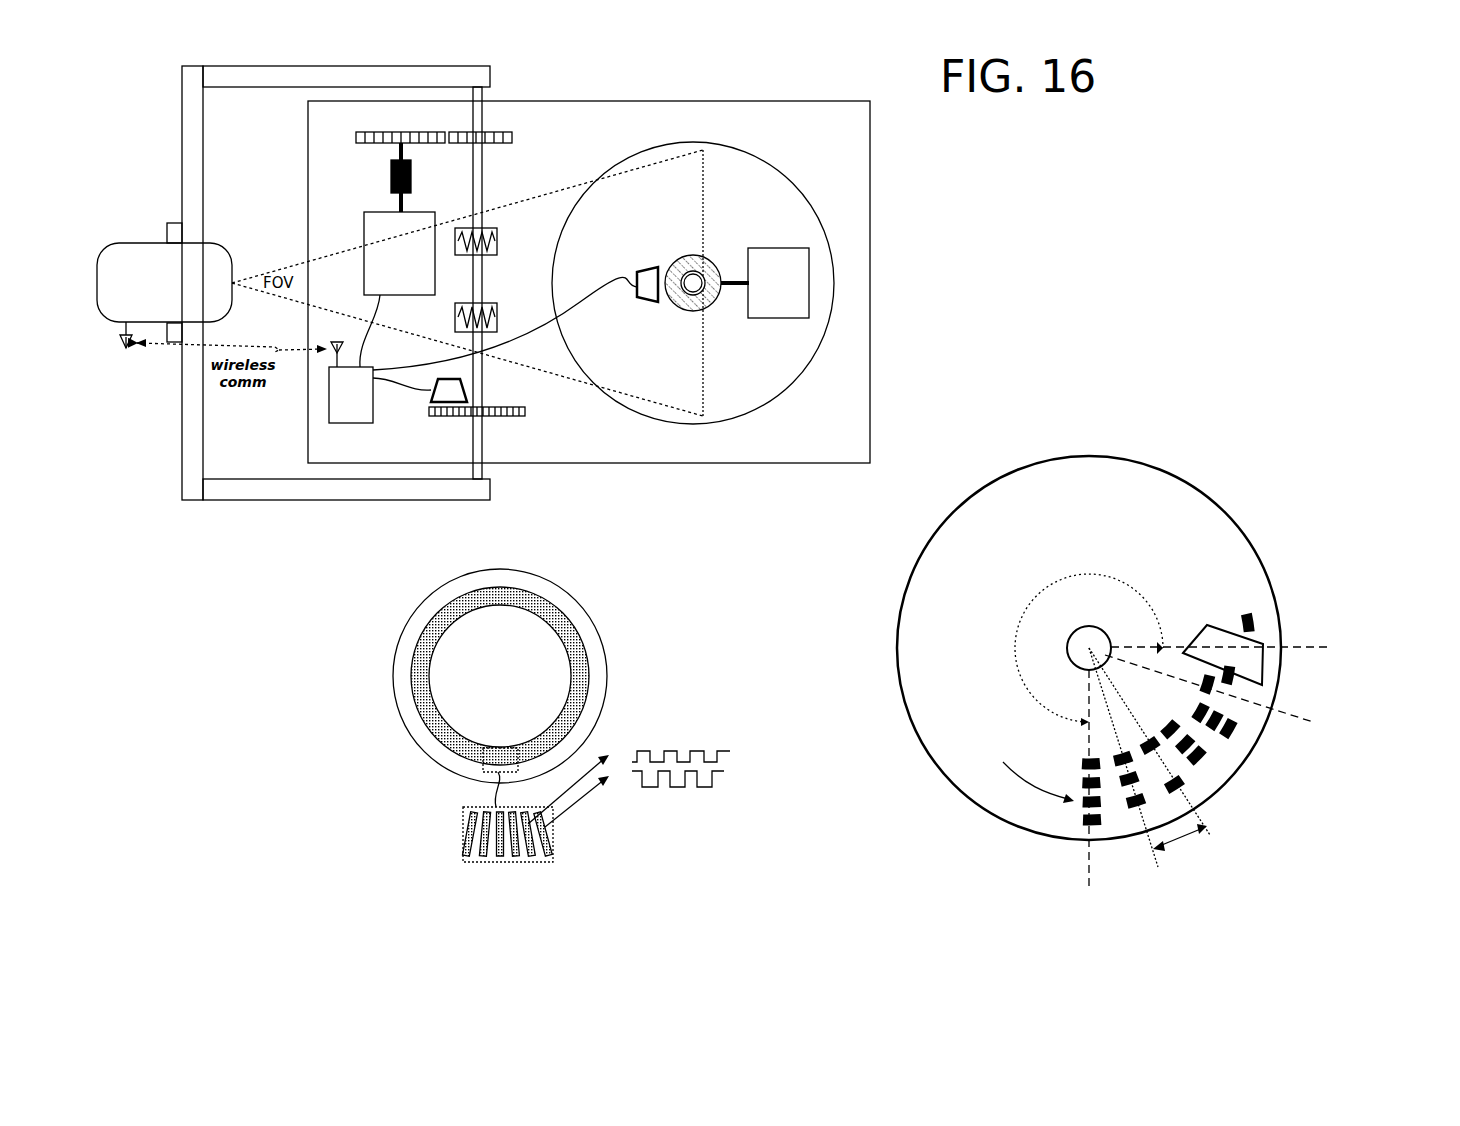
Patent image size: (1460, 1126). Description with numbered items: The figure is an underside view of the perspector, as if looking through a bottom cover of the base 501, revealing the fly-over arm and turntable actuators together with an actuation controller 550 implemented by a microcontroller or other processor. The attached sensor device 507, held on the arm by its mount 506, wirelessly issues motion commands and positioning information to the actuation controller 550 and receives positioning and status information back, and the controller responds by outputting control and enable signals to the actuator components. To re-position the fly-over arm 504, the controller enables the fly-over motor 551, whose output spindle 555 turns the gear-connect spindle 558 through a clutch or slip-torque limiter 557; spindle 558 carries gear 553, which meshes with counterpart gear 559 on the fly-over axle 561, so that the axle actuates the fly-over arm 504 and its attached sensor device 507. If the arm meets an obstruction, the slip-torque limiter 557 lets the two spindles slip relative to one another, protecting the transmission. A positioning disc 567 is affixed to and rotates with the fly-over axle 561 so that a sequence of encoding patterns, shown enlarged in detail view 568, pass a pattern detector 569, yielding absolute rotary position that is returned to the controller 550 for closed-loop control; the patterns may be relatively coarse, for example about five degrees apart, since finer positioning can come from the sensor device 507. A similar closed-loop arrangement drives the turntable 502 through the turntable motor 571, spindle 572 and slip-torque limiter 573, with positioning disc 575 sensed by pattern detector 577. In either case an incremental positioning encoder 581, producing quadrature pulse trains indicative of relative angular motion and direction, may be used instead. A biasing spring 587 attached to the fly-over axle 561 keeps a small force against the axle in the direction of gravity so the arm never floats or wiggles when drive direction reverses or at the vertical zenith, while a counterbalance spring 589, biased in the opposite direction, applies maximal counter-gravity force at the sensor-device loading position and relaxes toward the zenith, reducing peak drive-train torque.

The base 501 is at (765, 104).
The turntable 502 is at (762, 166).
The fly-over arm 504 is at (308, 480).
The mount 506 is at (166, 227).
The sensor device 507 is at (138, 249).
The actuation controller 550 is at (351, 382).
The fly-over motor 551 is at (399, 253).
The gear 553 is at (370, 131).
The spindle 555 is at (397, 204).
The slip-torque limiter 557 is at (390, 178).
The spindle 558 is at (406, 154).
The gear 559 is at (462, 131).
The fly-over axle 561 is at (476, 440).
The positioning disc 567 is at (503, 406).
The detail view 568 is at (517, 422).
The pattern detector 569 is at (430, 398).
The turntable motor 571 is at (778, 283).
The spindle 572 is at (741, 278).
The slip-torque limiter 573 is at (700, 268).
The positioning disc 575 is at (682, 266).
The pattern detector 577 is at (635, 278).
The incremental positioning encoder 581 is at (497, 422).
The biasing spring 587 is at (498, 236).
The counterbalance spring 589 is at (498, 313).